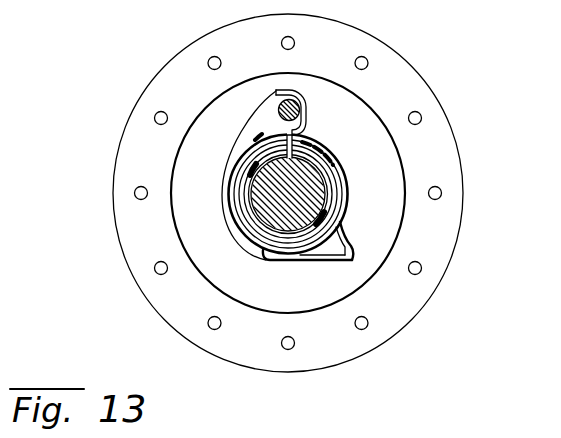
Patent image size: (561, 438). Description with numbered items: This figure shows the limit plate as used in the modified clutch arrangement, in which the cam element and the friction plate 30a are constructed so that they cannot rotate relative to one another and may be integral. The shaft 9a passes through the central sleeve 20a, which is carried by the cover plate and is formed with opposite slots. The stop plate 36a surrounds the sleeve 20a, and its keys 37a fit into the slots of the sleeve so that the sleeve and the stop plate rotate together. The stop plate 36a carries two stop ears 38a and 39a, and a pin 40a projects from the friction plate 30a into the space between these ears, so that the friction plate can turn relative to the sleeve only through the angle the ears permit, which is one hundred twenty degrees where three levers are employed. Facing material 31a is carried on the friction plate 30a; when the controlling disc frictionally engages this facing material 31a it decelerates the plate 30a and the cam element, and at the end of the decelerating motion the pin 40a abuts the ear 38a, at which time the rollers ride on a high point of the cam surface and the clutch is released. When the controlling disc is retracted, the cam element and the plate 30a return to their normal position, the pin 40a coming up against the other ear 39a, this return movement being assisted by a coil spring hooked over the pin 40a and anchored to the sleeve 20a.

The facing material 31a is at (227, 33).
The friction plate 30a is at (383, 158).
The shaft 9a is at (315, 195).
The keys 37a is at (253, 173).
The sleeve 20a is at (244, 210).
The stop plate 36a is at (262, 257).
The ear 38a is at (340, 247).
The ear 39a is at (266, 112).
The pin 40a is at (307, 115).